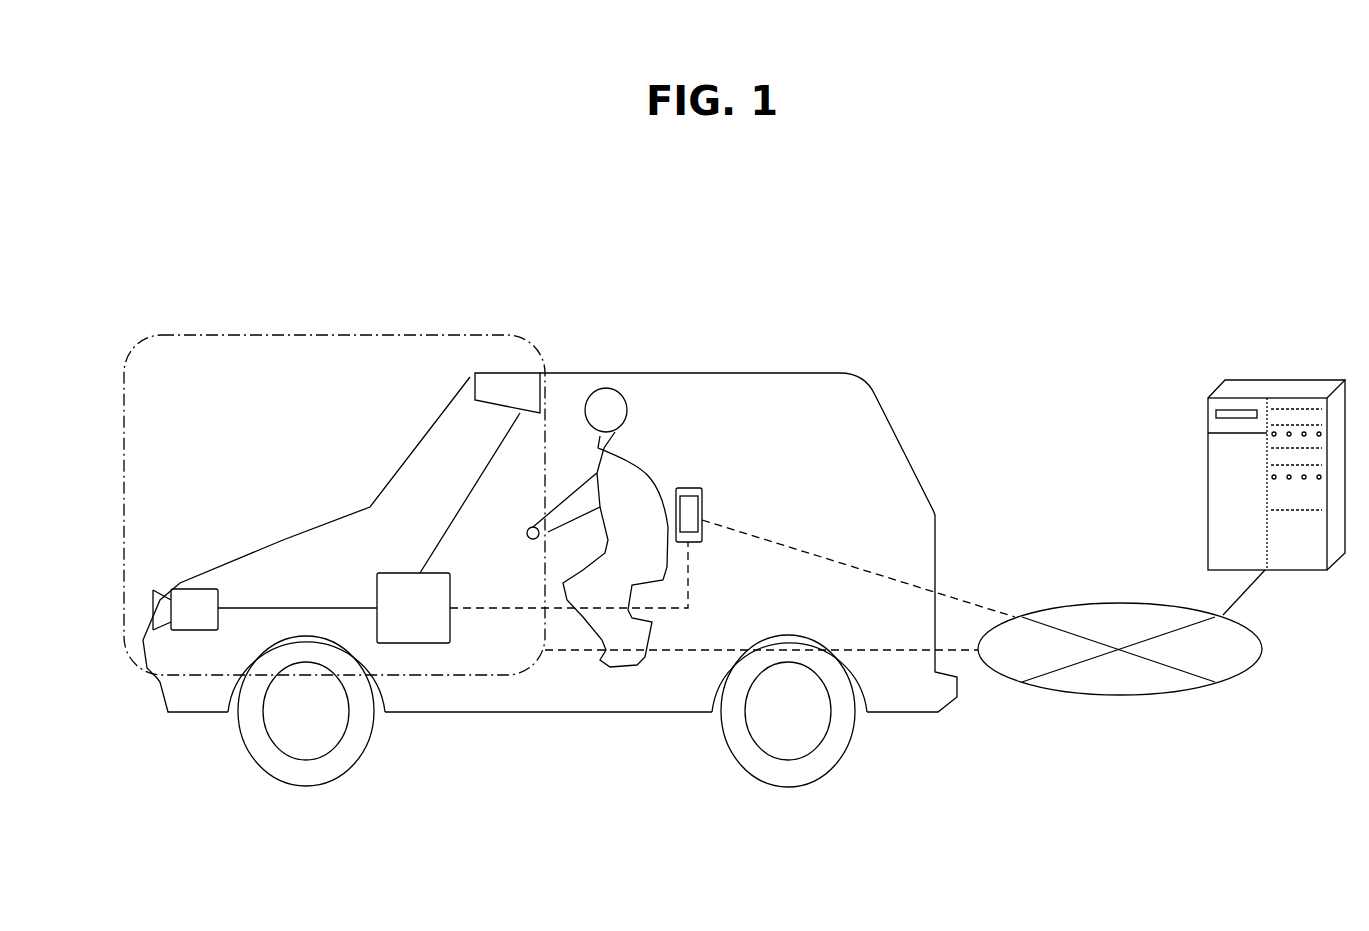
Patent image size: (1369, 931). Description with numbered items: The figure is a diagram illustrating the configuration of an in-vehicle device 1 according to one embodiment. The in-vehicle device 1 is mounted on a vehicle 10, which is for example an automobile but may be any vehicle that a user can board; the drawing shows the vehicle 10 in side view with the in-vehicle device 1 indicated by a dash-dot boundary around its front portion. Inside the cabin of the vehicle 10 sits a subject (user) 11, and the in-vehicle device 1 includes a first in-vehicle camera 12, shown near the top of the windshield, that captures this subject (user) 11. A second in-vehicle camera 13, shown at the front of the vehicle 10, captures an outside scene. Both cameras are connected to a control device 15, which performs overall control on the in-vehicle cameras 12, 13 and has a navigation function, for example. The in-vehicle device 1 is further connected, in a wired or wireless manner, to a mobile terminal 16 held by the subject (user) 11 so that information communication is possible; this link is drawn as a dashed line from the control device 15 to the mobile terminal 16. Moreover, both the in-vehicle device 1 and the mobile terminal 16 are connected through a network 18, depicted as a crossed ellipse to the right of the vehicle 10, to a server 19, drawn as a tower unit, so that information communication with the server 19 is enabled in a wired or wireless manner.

The in-vehicle device 1 is at (312, 335).
The vehicle 10 is at (762, 372).
The subject (user) 11 is at (636, 447).
The first in-vehicle camera 12 is at (476, 388).
The second in-vehicle camera 13 is at (194, 600).
The control device 15 is at (383, 574).
The mobile terminal 16 is at (702, 490).
The network 18 is at (1120, 696).
The server 19 is at (1275, 378).